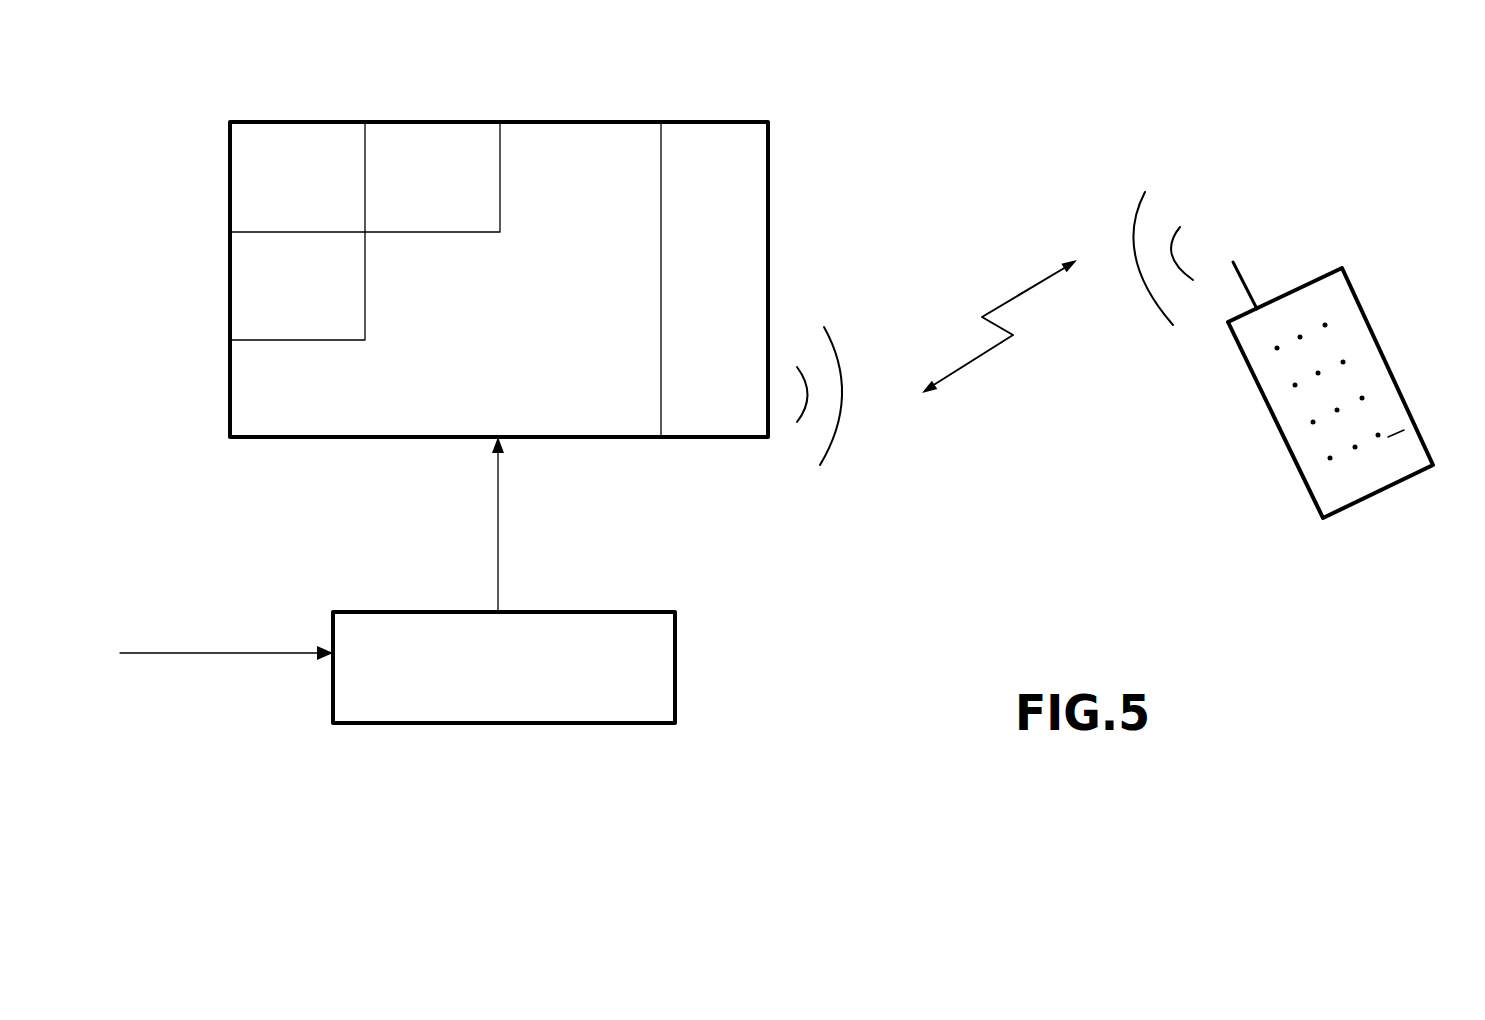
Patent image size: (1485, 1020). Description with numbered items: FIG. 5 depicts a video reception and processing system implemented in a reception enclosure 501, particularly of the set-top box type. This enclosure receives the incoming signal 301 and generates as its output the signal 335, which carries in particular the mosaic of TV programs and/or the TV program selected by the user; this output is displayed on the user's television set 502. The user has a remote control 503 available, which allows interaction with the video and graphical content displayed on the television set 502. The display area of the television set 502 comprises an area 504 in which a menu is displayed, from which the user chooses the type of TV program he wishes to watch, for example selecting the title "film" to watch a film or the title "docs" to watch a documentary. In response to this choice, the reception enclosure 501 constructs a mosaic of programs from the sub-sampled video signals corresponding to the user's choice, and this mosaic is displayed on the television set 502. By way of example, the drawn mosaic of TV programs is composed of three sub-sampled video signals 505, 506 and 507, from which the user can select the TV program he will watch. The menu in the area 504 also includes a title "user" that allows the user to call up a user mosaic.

The television set 502 is at (590, 121).
The area 504 is at (742, 200).
The sub-sampled video signal 505 is at (310, 165).
The sub-sampled video signal 506 is at (447, 165).
The sub-sampled video signal 507 is at (257, 280).
The remote control 503 is at (1383, 357).
The reception enclosure 501 is at (388, 612).
The signal 335 is at (498, 545).
The signal 301 is at (213, 653).